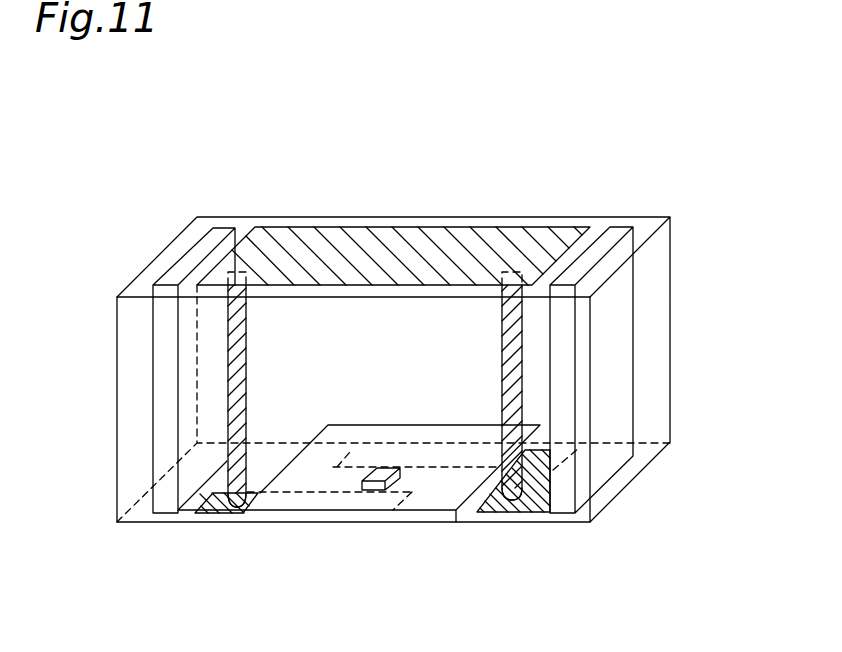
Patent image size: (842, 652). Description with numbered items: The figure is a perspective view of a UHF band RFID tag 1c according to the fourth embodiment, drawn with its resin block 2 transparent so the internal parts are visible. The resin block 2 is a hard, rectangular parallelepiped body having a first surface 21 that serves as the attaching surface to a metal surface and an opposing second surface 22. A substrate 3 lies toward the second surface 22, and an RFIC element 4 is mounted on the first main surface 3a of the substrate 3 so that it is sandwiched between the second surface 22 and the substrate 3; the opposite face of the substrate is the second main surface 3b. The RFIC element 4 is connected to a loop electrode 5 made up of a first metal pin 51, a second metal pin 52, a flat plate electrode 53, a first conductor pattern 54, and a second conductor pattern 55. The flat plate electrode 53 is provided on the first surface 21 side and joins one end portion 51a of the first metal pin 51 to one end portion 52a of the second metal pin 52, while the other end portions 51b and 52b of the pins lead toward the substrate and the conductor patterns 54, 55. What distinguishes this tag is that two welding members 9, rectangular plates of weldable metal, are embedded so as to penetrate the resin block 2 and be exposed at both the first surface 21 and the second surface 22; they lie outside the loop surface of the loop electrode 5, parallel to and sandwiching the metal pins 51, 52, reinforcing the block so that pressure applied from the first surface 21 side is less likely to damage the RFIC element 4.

The UHF band RFID tag 1c is at (122, 190).
The resin block 2 is at (668, 258).
The first surface 21 is at (581, 217).
The second surface 22 is at (204, 523).
The substrate 3 is at (430, 511).
The first main surface 3a is at (300, 468).
The second main surface 3b is at (371, 511).
The RFIC element 4 is at (382, 492).
The loop electrode 5 is at (557, 377).
The welding member 9 is at (183, 266).
The first metal pin 51 is at (234, 376).
The one end portion of the first metal pin 51a is at (232, 266).
The another end portion of the first metal pin 51b is at (238, 513).
The second metal pin 52 is at (519, 337).
The one end portion of the second metal pin 52a is at (508, 264).
The another end portion of the second metal pin 52b is at (505, 511).
The flat plate electrode 53 is at (302, 232).
The first conductor pattern 54 is at (225, 514).
The second conductor pattern 55 is at (557, 457).